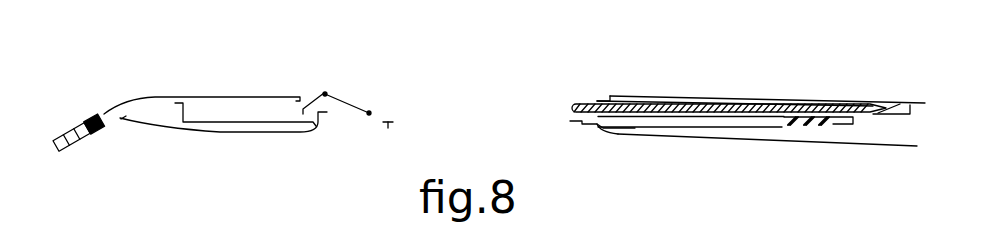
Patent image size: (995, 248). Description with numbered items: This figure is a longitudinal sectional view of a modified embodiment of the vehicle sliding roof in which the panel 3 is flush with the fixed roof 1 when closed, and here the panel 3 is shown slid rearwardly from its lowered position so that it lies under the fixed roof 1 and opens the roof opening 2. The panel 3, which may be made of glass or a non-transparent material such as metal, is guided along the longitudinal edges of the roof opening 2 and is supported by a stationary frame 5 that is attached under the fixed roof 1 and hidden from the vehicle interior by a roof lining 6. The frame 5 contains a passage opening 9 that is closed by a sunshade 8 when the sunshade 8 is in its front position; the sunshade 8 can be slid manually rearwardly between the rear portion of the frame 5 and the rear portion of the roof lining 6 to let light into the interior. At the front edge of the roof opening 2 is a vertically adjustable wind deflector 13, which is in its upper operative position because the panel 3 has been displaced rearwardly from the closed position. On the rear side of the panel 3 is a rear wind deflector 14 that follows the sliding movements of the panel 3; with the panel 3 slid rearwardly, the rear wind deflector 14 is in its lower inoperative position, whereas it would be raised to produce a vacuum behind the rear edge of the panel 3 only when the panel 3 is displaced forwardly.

The fixed roof 1 is at (222, 97).
The roof opening 2 is at (393, 93).
The panel 3 is at (679, 108).
The stationary frame 5 is at (213, 119).
The roof lining 6 is at (253, 133).
The sunshade 8 is at (664, 128).
The passage opening 9 is at (388, 128).
The wind deflector 13 is at (323, 92).
The rear wind deflector 14 is at (888, 104).